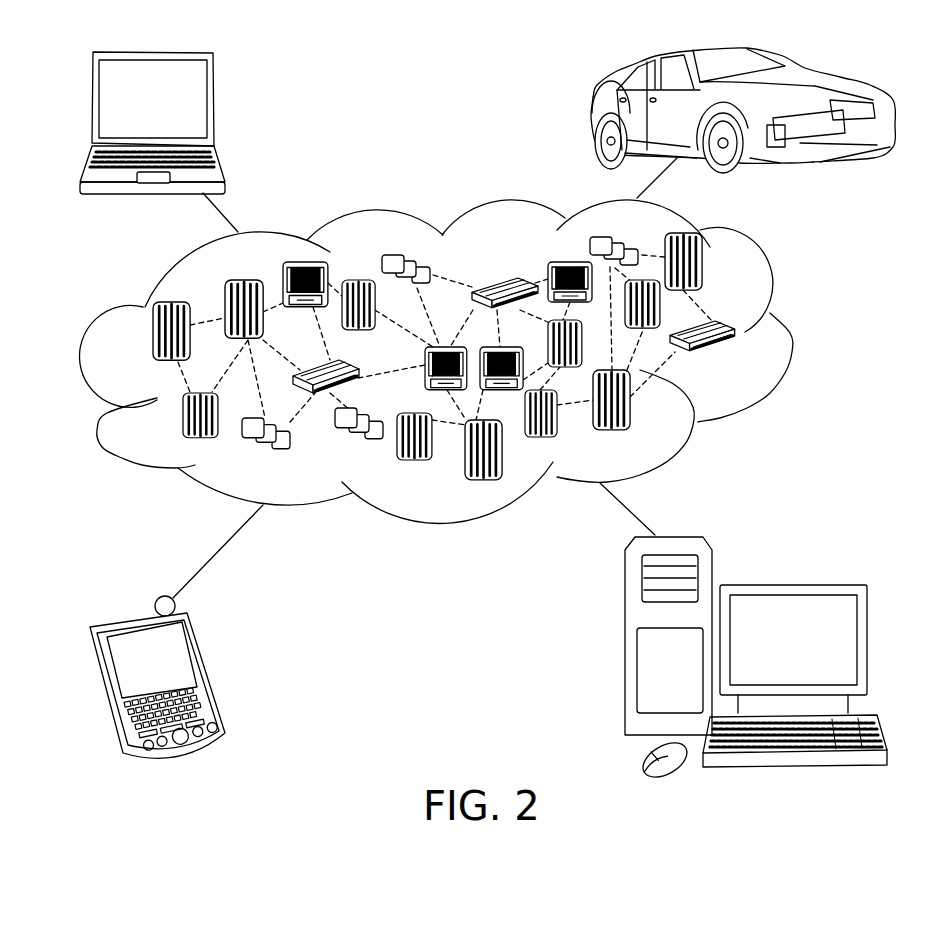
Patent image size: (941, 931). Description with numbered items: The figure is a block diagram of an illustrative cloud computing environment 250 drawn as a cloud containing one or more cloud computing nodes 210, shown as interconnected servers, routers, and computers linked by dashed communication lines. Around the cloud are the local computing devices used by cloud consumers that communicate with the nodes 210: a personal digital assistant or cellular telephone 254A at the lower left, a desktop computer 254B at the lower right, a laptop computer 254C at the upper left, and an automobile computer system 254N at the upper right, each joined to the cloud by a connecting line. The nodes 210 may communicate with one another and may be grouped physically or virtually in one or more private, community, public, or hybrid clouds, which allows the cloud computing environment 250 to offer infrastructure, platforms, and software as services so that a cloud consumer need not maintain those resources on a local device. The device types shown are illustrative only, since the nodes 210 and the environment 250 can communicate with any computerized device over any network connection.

The laptop computer 254C is at (215, 104).
The automobile computer system 254N is at (596, 110).
The personal digital assistant (PDA) or cellular telephone 254A is at (208, 670).
The desktop computer 254B is at (790, 585).
The cloud computing environment 250 is at (790, 338).
The cloud computing nodes 210 is at (742, 362).